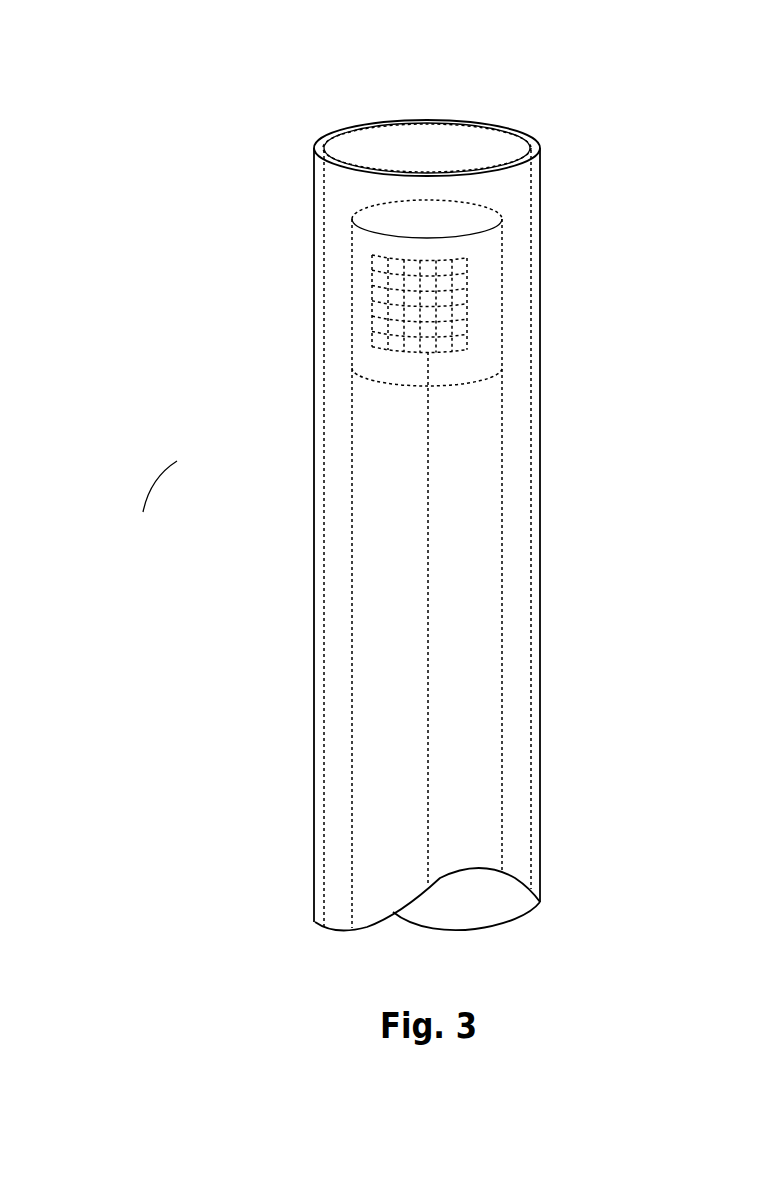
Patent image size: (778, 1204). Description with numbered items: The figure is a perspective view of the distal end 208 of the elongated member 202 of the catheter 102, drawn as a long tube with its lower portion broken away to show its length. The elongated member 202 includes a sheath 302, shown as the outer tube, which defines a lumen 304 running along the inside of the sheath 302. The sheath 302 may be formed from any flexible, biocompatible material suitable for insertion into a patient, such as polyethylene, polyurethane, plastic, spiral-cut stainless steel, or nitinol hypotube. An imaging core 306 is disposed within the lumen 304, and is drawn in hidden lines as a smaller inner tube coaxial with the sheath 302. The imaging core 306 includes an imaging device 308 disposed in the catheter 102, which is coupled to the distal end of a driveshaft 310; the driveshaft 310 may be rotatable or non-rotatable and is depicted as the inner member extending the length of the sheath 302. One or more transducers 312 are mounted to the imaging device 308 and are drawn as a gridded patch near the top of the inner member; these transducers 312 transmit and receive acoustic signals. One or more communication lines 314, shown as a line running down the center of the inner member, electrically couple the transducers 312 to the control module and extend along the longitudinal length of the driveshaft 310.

The catheter 102 is at (129, 143).
The elongated member 202 is at (243, 218).
The distal end 208 is at (183, 454).
The sheath 302 is at (535, 683).
The lumen 304 is at (342, 636).
The imaging core 306 is at (512, 501).
The imaging device 308 is at (370, 355).
The driveshaft 310 is at (372, 518).
The transducers 312 is at (476, 303).
The communication lines 314 is at (427, 728).